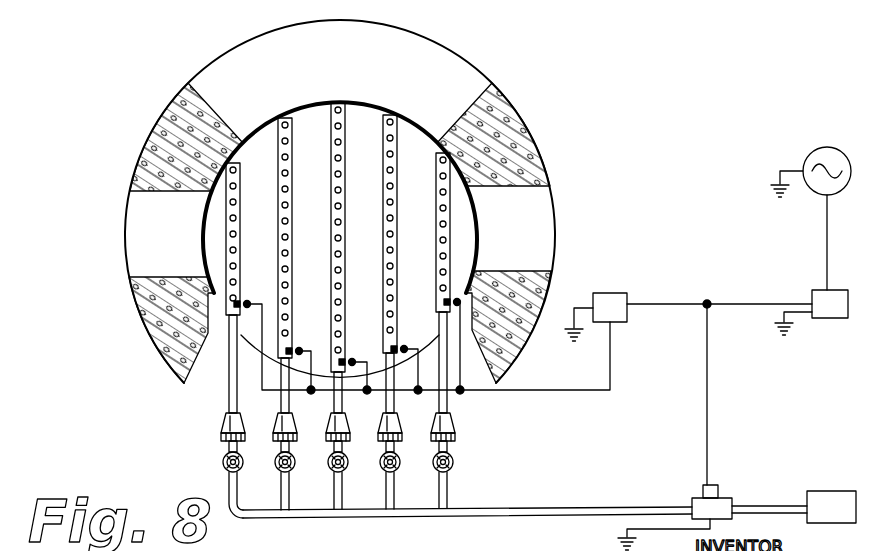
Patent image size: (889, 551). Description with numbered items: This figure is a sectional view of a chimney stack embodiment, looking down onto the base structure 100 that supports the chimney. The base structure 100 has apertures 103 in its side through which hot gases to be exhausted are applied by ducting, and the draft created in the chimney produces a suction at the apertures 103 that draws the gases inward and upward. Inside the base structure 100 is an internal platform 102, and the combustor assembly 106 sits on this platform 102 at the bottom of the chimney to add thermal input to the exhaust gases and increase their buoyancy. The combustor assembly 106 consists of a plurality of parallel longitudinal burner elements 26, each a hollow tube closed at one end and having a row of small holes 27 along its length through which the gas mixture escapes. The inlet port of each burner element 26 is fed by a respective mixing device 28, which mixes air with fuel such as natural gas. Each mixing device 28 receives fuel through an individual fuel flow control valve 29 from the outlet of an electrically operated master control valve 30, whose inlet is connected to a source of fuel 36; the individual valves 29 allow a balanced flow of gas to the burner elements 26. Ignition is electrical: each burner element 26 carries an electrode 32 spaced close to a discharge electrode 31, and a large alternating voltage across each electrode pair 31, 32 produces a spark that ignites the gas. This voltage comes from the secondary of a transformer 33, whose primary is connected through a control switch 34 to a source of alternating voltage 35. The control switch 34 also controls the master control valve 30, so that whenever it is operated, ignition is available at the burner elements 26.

The base structure 100 is at (147, 142).
The internal platform 102 is at (425, 133).
The apertures 103 is at (135, 263).
The combustor assembly 106 is at (325, 218).
The burner elements 26 is at (384, 186).
The small holes 27 is at (333, 268).
The mixing device 28 is at (381, 424).
The fuel flow control valve 29 is at (278, 470).
The master control valve 30 is at (700, 498).
The discharge electrode 31 is at (404, 349).
The electrode 32 is at (390, 350).
The transformer 33 is at (605, 293).
The control switch 34 is at (835, 318).
The source of alternating voltage 35 is at (824, 148).
The source of fuel 36 is at (833, 491).